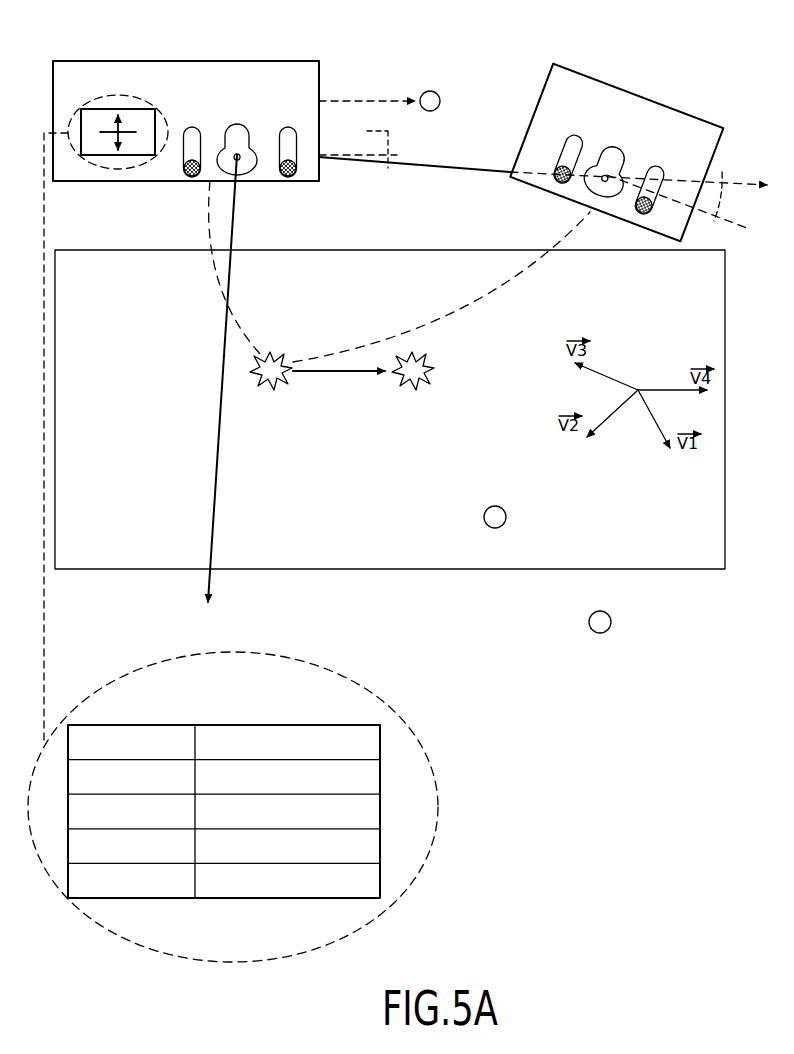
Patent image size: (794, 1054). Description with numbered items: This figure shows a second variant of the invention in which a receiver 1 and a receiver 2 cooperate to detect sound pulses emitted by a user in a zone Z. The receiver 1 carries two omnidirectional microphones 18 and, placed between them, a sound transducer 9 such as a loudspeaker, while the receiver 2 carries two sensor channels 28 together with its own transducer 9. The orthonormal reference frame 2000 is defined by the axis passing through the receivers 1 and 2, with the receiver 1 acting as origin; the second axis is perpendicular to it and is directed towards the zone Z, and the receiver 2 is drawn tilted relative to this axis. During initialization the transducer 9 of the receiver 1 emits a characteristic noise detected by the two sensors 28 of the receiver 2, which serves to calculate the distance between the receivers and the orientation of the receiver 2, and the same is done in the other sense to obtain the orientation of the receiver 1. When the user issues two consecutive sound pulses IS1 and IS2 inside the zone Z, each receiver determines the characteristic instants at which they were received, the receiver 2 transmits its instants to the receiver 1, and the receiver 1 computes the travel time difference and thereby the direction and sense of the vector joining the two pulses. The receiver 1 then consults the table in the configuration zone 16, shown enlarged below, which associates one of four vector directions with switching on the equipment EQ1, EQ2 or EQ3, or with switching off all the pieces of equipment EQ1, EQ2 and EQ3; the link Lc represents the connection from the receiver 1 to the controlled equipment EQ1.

The receiver 1 is at (142, 61).
The receiver 2 is at (650, 98).
The sound transducer 9 is at (237, 128).
The configuration zone 16 is at (120, 109).
The omnidirectional microphone 18 is at (192, 127).
The channel 28 is at (576, 140).
The orthonormal reference frame 2000 is at (428, 172).
The zone Z is at (390, 252).
The communication link Lc is at (367, 90).
The equipment EQ1 is at (428, 91).
The equipment EQ2 is at (506, 517).
The equipment EQ3 is at (611, 622).
The sound pulse IS1 is at (282, 384).
The sound pulse IS2 is at (422, 384).